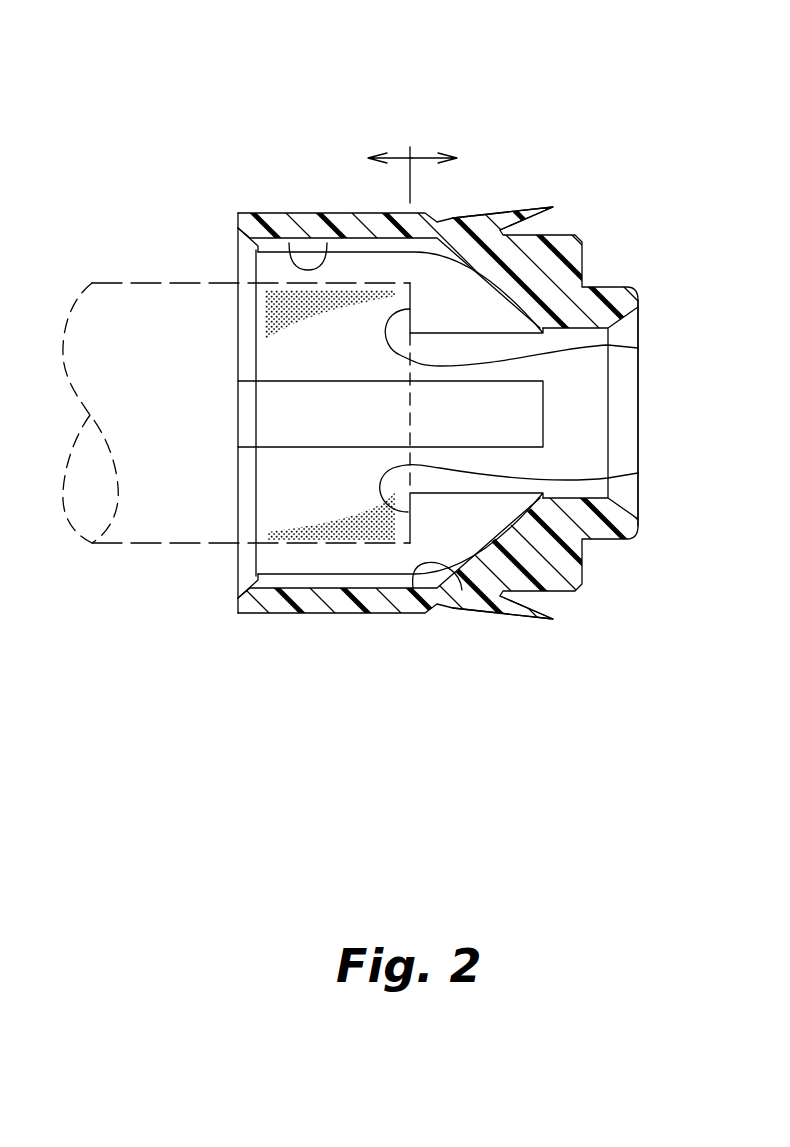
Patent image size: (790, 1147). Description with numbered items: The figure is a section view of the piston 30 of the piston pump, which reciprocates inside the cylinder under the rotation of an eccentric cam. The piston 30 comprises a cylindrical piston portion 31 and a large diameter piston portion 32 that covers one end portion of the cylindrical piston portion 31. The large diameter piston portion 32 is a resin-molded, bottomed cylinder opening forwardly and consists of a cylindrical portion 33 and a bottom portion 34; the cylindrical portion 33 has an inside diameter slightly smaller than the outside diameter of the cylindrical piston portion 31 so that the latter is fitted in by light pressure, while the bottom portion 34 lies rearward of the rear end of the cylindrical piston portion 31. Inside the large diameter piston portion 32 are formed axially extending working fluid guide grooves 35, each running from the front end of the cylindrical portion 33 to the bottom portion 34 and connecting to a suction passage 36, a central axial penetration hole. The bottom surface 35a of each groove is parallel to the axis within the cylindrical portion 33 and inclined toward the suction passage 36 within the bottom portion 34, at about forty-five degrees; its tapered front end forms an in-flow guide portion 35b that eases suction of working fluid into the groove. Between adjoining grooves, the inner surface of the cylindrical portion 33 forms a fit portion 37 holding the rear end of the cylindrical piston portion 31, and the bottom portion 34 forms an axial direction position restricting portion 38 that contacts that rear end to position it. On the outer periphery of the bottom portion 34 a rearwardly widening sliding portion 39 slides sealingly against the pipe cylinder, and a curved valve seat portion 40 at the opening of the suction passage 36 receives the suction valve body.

The piston 30 is at (395, 365).
The cylindrical piston portion 31 is at (125, 545).
The large diameter piston portion 32 is at (340, 604).
The cylindrical portion 33 is at (371, 172).
The bottom portion 34 is at (454, 157).
The working fluid guide groove 35 is at (406, 276).
The bottom surface of working fluid guide groove 35a is at (308, 240).
The in-flow guide portion 35b is at (245, 245).
The suction passage 36 is at (662, 388).
The fit portion 37 is at (281, 358).
The axial direction position restricting portion 38 is at (638, 348).
The sliding portion 39 is at (533, 624).
The valve seat portion 40 is at (623, 438).